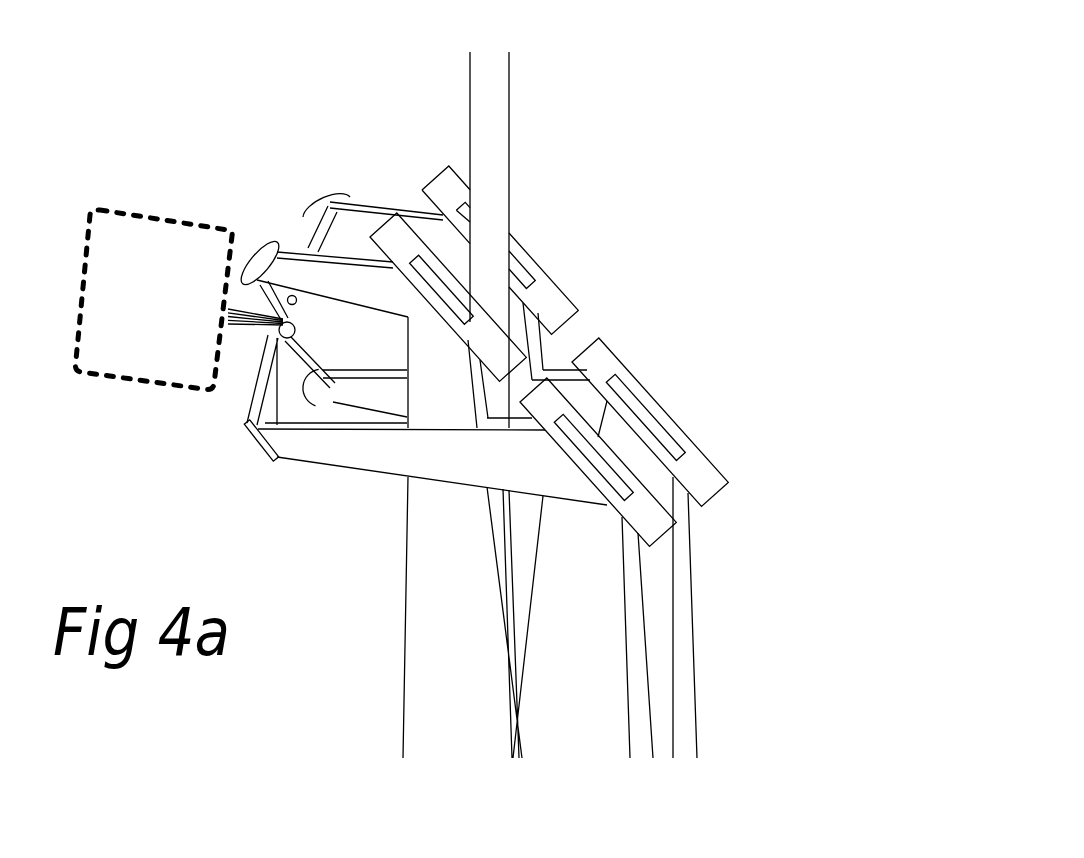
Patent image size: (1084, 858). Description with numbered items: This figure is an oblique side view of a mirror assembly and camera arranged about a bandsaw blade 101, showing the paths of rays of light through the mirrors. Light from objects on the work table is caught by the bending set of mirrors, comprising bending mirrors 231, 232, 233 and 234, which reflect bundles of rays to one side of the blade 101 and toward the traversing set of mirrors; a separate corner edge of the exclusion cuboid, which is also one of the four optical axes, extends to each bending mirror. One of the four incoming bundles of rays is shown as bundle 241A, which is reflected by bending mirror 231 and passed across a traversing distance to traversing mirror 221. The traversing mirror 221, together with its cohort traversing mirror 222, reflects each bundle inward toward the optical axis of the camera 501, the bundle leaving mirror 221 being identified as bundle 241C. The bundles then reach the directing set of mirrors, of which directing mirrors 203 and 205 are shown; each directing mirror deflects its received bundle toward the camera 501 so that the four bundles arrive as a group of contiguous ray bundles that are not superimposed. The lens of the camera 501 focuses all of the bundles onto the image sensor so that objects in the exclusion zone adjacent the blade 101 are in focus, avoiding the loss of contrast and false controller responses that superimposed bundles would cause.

The blade 101 is at (477, 95).
The incoming bundle of rays 241A is at (410, 523).
The bundle of rays 241C is at (243, 284).
The traversing mirror 221 is at (260, 243).
The traversing mirror 222 is at (245, 438).
The directing mirror 203 is at (298, 331).
The directing mirror 205 is at (243, 293).
The camera 501 is at (133, 208).
The bending mirror 231 is at (477, 327).
The bending mirror 232 is at (650, 523).
The bending mirror 233 is at (632, 373).
The bending mirror 234 is at (443, 168).